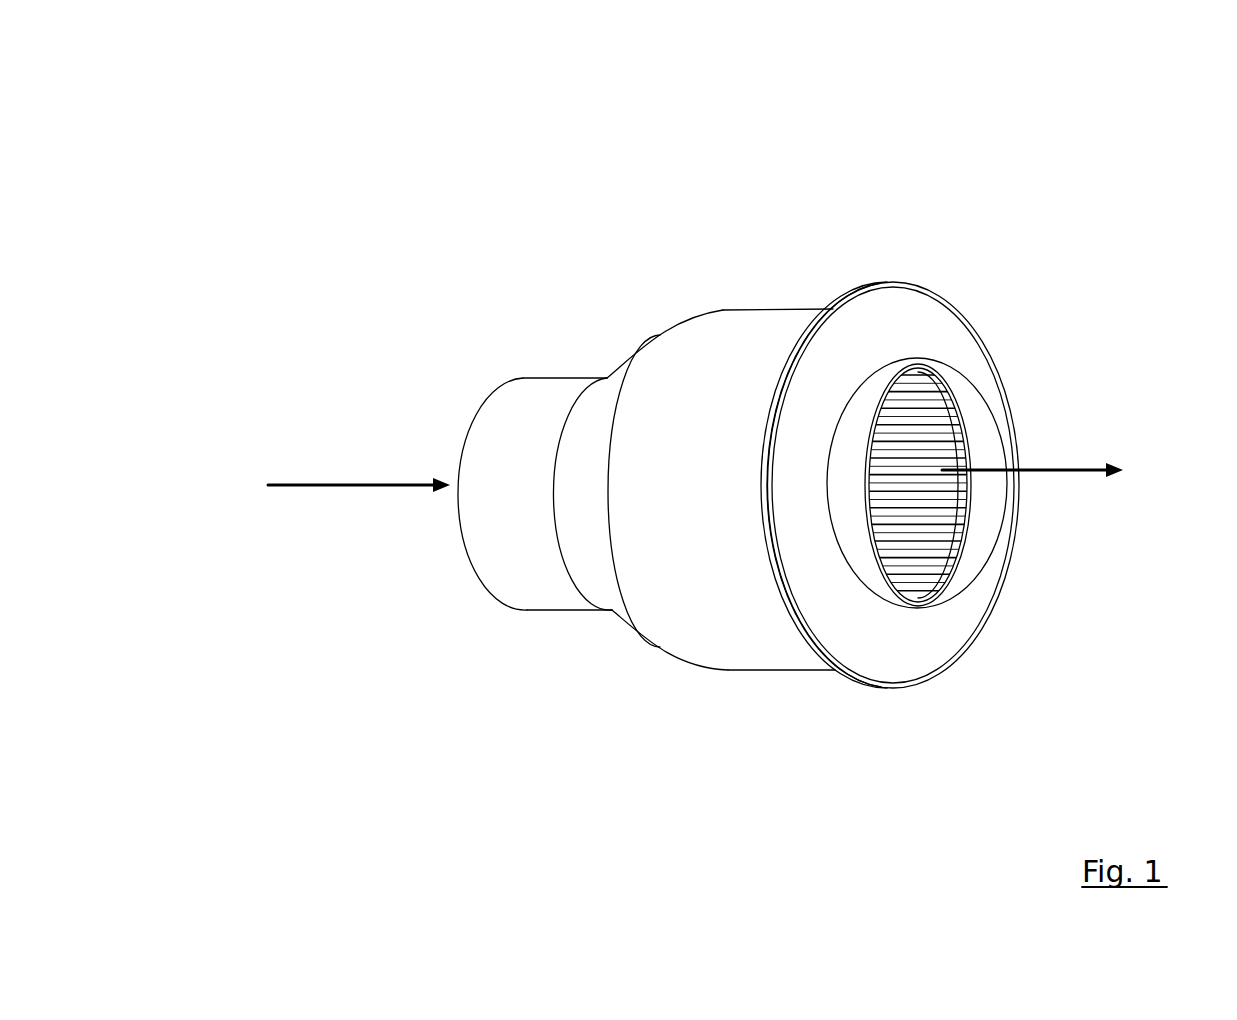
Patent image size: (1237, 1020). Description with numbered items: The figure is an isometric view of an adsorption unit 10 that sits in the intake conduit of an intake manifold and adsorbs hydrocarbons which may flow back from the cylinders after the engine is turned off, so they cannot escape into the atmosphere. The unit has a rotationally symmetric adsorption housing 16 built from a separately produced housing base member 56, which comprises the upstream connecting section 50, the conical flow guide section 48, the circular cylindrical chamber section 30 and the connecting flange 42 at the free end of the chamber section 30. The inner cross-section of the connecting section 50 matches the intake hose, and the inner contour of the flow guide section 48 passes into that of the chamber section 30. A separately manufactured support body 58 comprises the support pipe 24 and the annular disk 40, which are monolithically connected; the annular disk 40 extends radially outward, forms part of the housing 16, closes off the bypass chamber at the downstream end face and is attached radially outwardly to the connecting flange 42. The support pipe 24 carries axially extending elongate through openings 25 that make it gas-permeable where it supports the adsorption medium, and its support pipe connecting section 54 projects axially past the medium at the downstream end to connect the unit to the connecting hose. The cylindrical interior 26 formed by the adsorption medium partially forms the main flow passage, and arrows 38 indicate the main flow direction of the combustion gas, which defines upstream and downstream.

The adsorption unit 10 is at (193, 148).
The adsorption housing 16 is at (722, 305).
The support pipe 24 is at (977, 525).
The through openings 25 is at (933, 440).
The interior 26 is at (917, 527).
The chamber section 30 is at (760, 627).
The arrows 38 is at (342, 485).
The annular disk 40 is at (917, 668).
The connecting flange 42 is at (850, 290).
The flow guide section 48 is at (587, 553).
The connecting section 50 is at (532, 400).
The support pipe connecting section 54 is at (962, 367).
The housing base member 56 is at (612, 342).
The support body 58 is at (1028, 517).